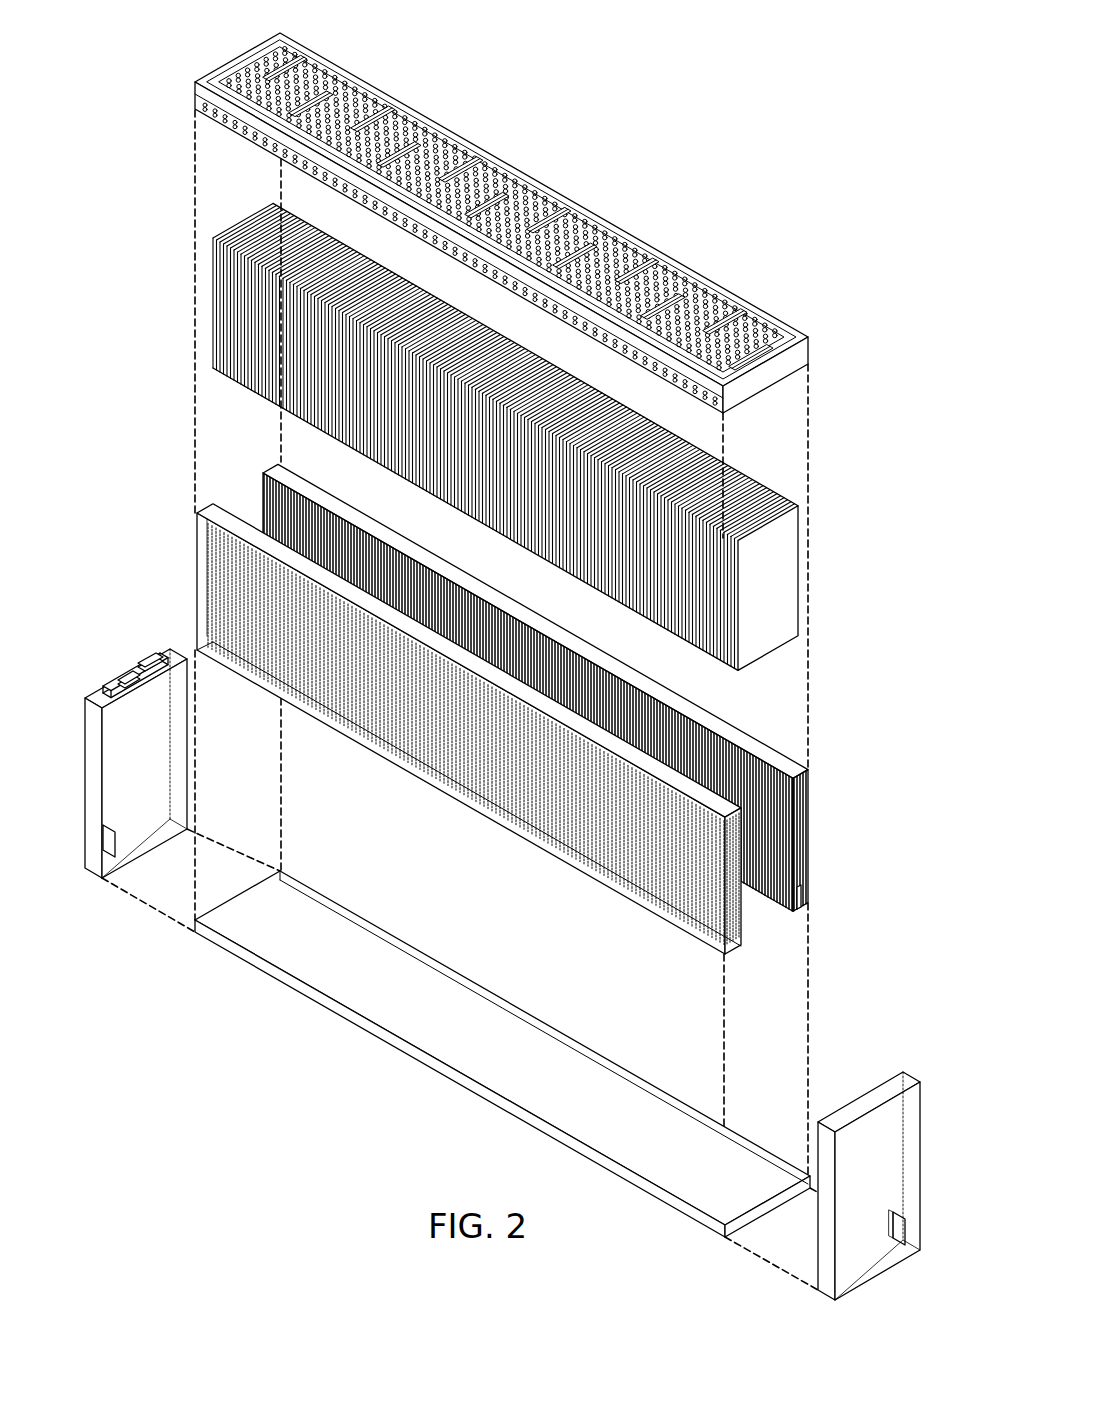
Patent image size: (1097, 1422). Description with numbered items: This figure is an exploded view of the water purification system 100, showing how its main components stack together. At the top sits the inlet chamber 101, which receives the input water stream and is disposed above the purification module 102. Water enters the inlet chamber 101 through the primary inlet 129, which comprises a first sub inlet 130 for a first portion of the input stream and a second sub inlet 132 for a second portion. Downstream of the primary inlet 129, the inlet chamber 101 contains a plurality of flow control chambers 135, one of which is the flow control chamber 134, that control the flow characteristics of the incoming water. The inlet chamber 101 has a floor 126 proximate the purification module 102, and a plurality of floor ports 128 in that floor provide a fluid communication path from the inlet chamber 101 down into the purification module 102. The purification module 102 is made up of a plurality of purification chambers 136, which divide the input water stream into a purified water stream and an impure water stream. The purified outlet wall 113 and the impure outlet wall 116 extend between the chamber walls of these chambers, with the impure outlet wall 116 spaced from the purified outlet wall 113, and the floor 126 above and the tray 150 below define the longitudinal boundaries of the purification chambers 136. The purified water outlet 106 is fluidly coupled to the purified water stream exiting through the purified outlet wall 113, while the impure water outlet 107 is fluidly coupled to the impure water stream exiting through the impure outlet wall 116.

The water purification system 100 is at (90, 86).
The inlet chamber 101 is at (501, 209).
The purification module 102 is at (176, 325).
The purified water outlet 106 is at (113, 741).
The impure water outlet 107 is at (922, 1220).
The purified outlet wall 113 is at (202, 583).
The impure outlet wall 116 is at (300, 485).
The floor 126 is at (380, 120).
The floor ports 128 is at (397, 133).
The primary inlet 129 is at (112, 671).
The first sub inlet 130 is at (154, 661).
The second sub inlet 132 is at (127, 678).
The flow control chamber 134 is at (298, 57).
The flow control chambers 135 is at (362, 84).
The purification chambers 136 is at (235, 212).
The tray 150 is at (318, 966).